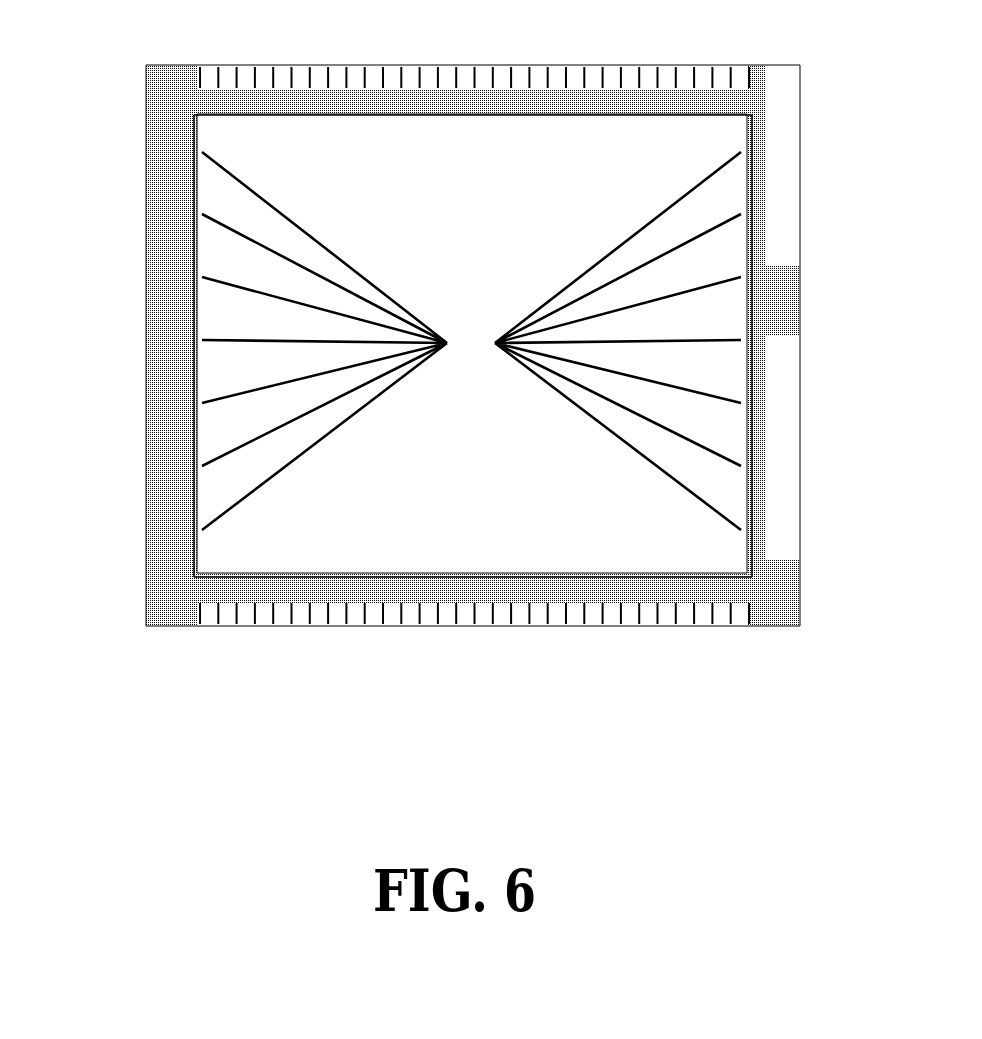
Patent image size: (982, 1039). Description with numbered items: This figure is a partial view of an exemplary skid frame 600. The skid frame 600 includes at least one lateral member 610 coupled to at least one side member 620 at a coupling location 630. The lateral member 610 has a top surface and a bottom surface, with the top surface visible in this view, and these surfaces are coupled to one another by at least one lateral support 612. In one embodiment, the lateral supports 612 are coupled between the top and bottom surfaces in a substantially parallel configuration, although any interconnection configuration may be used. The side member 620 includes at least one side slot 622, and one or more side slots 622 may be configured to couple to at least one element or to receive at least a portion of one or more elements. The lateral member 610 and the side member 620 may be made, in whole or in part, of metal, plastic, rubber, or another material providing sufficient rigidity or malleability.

The skid frame 600 is at (111, 690).
The lateral member 610 is at (143, 430).
The lateral support 612 is at (471, 341).
The side member 620 is at (297, 65).
The side slot 622 is at (470, 65).
The coupling location 630 is at (193, 65).